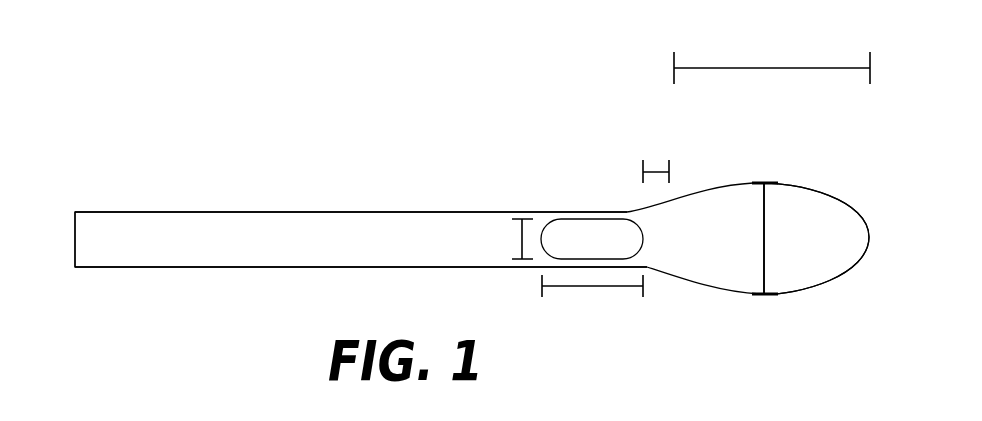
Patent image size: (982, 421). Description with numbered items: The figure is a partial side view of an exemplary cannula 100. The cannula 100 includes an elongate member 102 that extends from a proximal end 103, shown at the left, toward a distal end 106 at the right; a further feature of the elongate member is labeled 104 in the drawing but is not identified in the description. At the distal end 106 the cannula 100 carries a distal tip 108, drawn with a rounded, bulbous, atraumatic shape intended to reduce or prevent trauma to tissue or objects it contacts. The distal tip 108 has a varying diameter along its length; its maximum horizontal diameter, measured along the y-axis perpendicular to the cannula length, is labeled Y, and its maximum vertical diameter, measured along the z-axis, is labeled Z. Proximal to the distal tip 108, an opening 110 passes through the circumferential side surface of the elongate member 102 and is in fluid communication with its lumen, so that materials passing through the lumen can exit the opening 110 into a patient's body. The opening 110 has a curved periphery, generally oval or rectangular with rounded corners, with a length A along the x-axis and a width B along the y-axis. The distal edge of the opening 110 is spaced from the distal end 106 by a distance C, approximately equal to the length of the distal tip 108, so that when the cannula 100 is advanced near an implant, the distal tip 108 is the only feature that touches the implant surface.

The cannula 100 is at (120, 82).
The elongate member 102 is at (153, 212).
The proximal end 103 is at (74, 238).
The handle lower edge 104 is at (125, 285).
The distal end 106 is at (860, 268).
The distal tip 108 is at (764, 183).
The opening 110 is at (598, 213).
The length of opening A is at (592, 287).
The width of opening B is at (520, 239).
The distance from opening to distal end C is at (655, 172).
The maximum horizontal diameter of distal tip Y is at (773, 68).
The maximum vertical diameter of distal tip Z is at (765, 237).